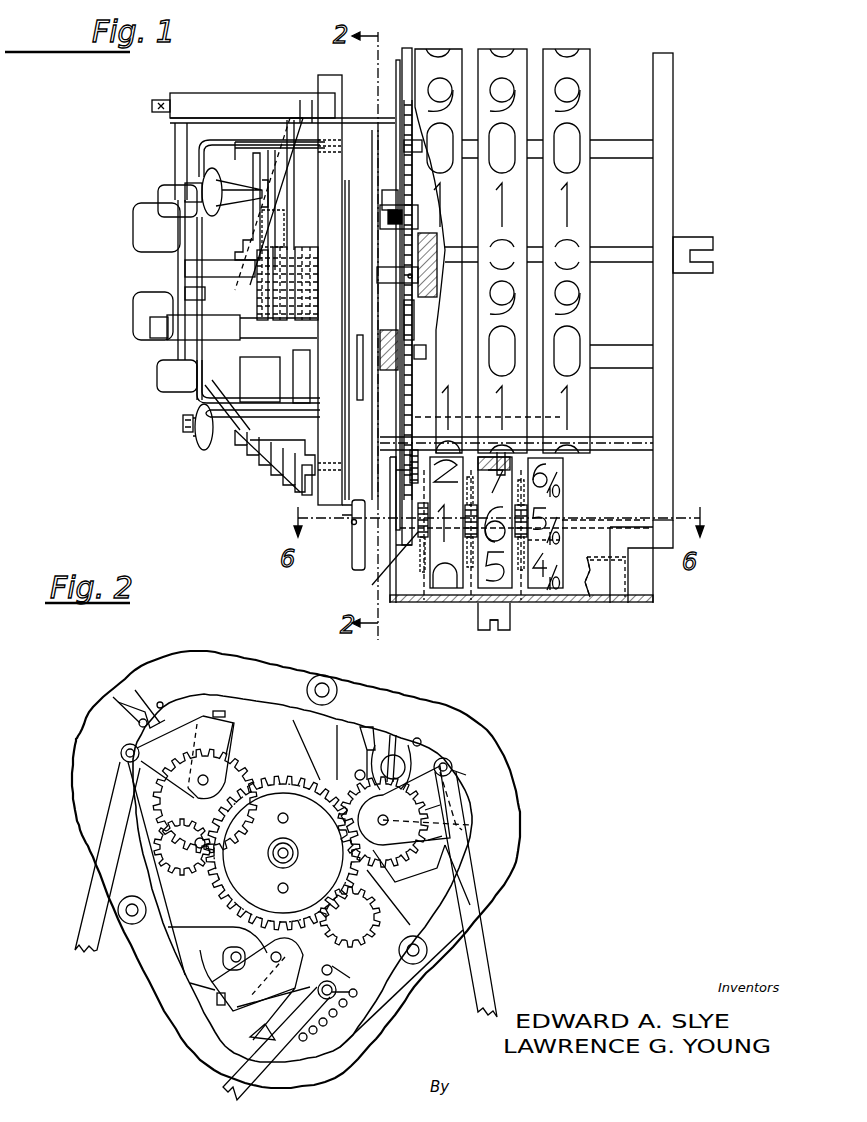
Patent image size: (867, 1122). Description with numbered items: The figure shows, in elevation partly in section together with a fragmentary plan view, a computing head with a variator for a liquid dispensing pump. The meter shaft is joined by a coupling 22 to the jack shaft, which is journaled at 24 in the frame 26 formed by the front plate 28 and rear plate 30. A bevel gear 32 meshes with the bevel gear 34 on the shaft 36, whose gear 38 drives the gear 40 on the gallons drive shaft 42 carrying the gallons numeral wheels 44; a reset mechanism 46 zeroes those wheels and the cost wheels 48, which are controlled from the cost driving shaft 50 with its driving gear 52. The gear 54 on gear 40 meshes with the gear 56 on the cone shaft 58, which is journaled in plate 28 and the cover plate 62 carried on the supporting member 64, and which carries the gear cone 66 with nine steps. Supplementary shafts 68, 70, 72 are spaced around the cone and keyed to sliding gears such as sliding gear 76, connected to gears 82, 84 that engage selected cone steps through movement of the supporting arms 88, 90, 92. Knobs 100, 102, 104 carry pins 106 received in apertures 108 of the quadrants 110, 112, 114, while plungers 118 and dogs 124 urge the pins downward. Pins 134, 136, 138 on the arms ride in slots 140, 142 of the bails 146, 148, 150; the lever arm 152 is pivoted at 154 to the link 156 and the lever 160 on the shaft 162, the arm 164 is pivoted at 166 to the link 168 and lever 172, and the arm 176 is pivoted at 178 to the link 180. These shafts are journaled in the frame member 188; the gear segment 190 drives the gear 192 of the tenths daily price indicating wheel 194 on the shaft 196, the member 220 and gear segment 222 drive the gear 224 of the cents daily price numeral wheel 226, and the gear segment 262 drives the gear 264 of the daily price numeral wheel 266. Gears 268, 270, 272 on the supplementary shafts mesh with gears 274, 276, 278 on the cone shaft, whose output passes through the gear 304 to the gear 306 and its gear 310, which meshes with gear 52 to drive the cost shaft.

In FIG. 1, the coupling 22 is at (502, 632).
In FIG. 1, the journal 24 is at (484, 632).
In FIG. 1, the frame 26 is at (666, 486).
In FIG. 1, the front side member or plate 28 is at (396, 70).
In FIG. 1, the rear side member or plate 30 is at (674, 72).
In FIG. 1, the bevel gear 32 is at (520, 452).
In FIG. 1, the bevel gear 34 is at (560, 417).
In FIG. 1, the shaft 36 is at (658, 440).
In FIG. 1, the gear 38 is at (410, 474).
In FIG. 1, the gear 40 is at (412, 372).
In FIG. 1, the amount or gallons drive shaft 42 is at (420, 352).
In FIG. 1, the gallons numeral wheels 44 is at (598, 332).
In FIG. 1, the reset mechanism 46 is at (695, 235).
In FIG. 1, the cost wheels 48 is at (513, 46).
In FIG. 1, the cost driving shaft 50 is at (414, 150).
In FIG. 1, the driving gear 52 is at (395, 118).
In FIG. 1, the gear 54 is at (400, 395).
In FIG. 1, the gear 56 is at (414, 318).
In FIG. 1, the cone or driving shaft 58 is at (190, 275).
In FIG. 2, the cone or driving shaft 58 is at (290, 845).
In FIG. 1, the cover plate 62 is at (183, 223).
In FIG. 2, the cover plate 62 is at (300, 720).
In FIG. 1, the supporting member 64 is at (328, 78).
In FIG. 2, the supporting member 64 is at (508, 848).
In FIG. 1, the gear cone 66 is at (262, 290).
In FIG. 1, the supplementary shaft 68 is at (185, 359).
In FIG. 2, the supplementary shaft 68 is at (272, 957).
In FIG. 2, the supplementary shaft 70 is at (205, 775).
In FIG. 2, the supplementary shaft 72 is at (390, 816).
In FIG. 1, the sliding gear 76 is at (255, 354).
In FIG. 2, the gear 82 is at (352, 922).
In FIG. 2, the gear 84 is at (172, 852).
In FIG. 1, the supporting arm 88 is at (282, 382).
In FIG. 2, the supporting arm 88 is at (190, 983).
In FIG. 2, the supporting arm 90 is at (190, 720).
In FIG. 2, the supporting arm 92 is at (440, 850).
In FIG. 1, the knob 100 is at (199, 432).
In FIG. 1, the knob 102 is at (187, 198).
In FIG. 1, the knob 104 is at (187, 163).
In FIG. 1, the pin 106 is at (262, 182).
In FIG. 2, the aperture 108 is at (140, 722).
In FIG. 1, the quadrant 110 is at (268, 480).
In FIG. 2, the quadrant 110 is at (355, 977).
In FIG. 1, the quadrant 112 is at (303, 110).
In FIG. 2, the quadrant 112 is at (148, 713).
In FIG. 2, the quadrant 114 is at (372, 740).
In FIG. 1, the plunger 118 is at (175, 190).
In FIG. 2, the dog 124 is at (400, 740).
In FIG. 1, the pin 134 is at (260, 462).
In FIG. 2, the pin 134 is at (217, 1000).
In FIG. 2, the pin 136 is at (220, 712).
In FIG. 2, the pin 138 is at (468, 825).
In FIG. 1, the slot 140 is at (240, 425).
In FIG. 1, the slot 142 is at (245, 148).
In FIG. 1, the bail 146 is at (224, 420).
In FIG. 2, the bail 146 is at (250, 1037).
In FIG. 1, the bail 148 is at (235, 142).
In FIG. 2, the bail 148 is at (228, 727).
In FIG. 2, the bail 150 is at (420, 850).
In FIG. 1, the lever arm 152 is at (362, 375).
In FIG. 2, the lever arm 152 is at (305, 990).
In FIG. 2, the pivot 154 is at (335, 1010).
In FIG. 1, the link 156 is at (345, 445).
In FIG. 2, the link 156 is at (222, 1088).
In FIG. 1, the lever 160 is at (356, 545).
In FIG. 1, the shaft 162 is at (350, 522).
In FIG. 2, the arm 164 is at (140, 765).
In FIG. 2, the pivot 166 is at (124, 748).
In FIG. 1, the link 168 is at (312, 476).
In FIG. 2, the link 168 is at (96, 869).
In FIG. 1, the lever 172 is at (372, 585).
In FIG. 2, the arm 176 is at (447, 760).
In FIG. 2, the pivot 178 is at (452, 766).
In FIG. 2, the link 180 is at (478, 927).
In FIG. 1, the frame member 188 is at (612, 594).
In FIG. 1, the gear segment 190 is at (565, 495).
In FIG. 1, the gear 192 is at (552, 545).
In FIG. 1, the tenths daily price indicating wheel 194 is at (574, 600).
In FIG. 1, the shaft 196 is at (592, 520).
In FIG. 1, the member 220 is at (512, 600).
In FIG. 1, the gear segment 222 is at (478, 610).
In FIG. 1, the gear 224 is at (468, 570).
In FIG. 1, the cents or units daily price numeral wheel 226 is at (522, 580).
In FIG. 1, the gear segment 262 is at (428, 590).
In FIG. 1, the gear 264 is at (422, 530).
In FIG. 1, the daily price numeral wheel 266 is at (440, 600).
In FIG. 2, the gear 268 is at (224, 955).
In FIG. 2, the gear 270 is at (243, 762).
In FIG. 2, the gear 272 is at (355, 790).
In FIG. 2, the gear 274 is at (238, 930).
In FIG. 2, the gear 276 is at (262, 836).
In FIG. 2, the gear 278 is at (243, 873).
In FIG. 1, the gear 304 is at (418, 240).
In FIG. 1, the gear 306 is at (384, 192).
In FIG. 1, the gear 310 is at (386, 206).